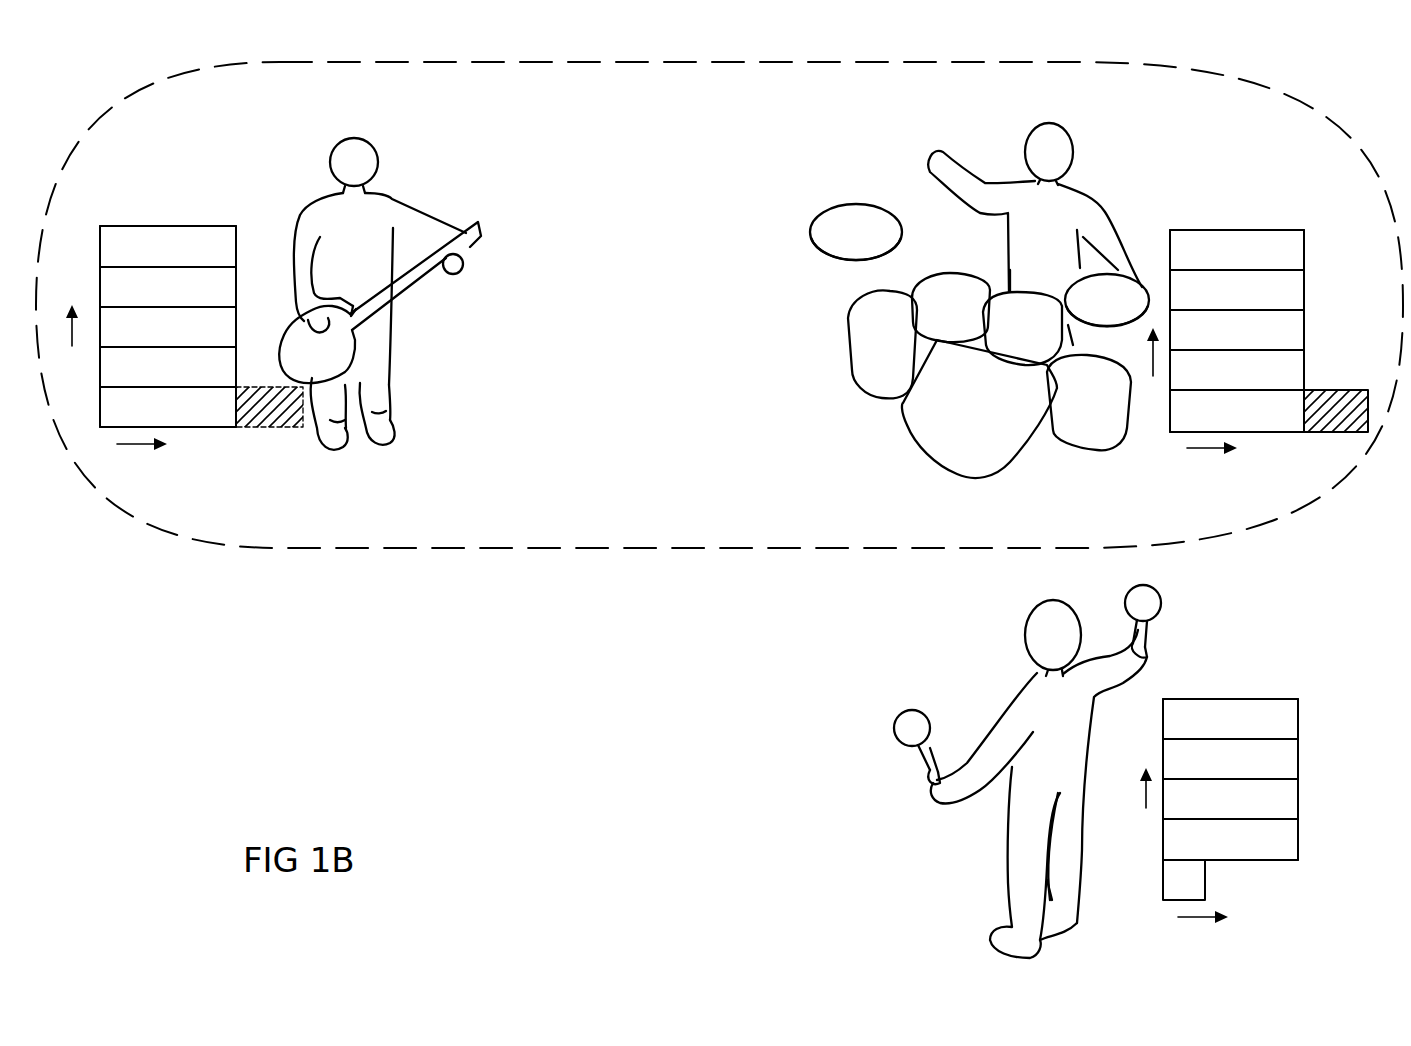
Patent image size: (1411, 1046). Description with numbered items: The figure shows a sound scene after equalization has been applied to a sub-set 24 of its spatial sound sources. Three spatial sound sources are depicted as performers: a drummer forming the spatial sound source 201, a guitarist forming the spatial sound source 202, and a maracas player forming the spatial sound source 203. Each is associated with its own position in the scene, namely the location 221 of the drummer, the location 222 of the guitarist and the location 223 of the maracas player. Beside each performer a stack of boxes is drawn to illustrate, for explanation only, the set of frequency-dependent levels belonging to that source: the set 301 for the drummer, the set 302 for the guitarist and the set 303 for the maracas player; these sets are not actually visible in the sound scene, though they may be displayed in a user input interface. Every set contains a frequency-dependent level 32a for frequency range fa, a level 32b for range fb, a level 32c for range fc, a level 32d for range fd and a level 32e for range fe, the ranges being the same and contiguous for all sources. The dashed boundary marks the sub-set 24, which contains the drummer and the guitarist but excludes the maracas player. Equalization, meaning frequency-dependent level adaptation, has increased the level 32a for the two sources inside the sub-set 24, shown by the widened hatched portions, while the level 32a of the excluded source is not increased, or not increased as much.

The sub-set 24 is at (1262, 86).
The spatial sound source 201 is at (1049, 126).
The spatial sound source 202 is at (349, 141).
The spatial sound source 203 is at (1051, 603).
The location 221 is at (986, 256).
The location 222 is at (398, 312).
The location 223 is at (1094, 768).
The set of frequency-dependent levels 301 is at (1228, 230).
The set of frequency-dependent levels 302 is at (162, 226).
The set of frequency-dependent levels 303 is at (1225, 699).
The frequency-dependent level 32a is at (258, 428).
The frequency-dependent level 32b is at (236, 357).
The frequency-dependent level 32c is at (236, 325).
The frequency-dependent level 32d is at (236, 272).
The frequency-dependent level 32e is at (236, 226).